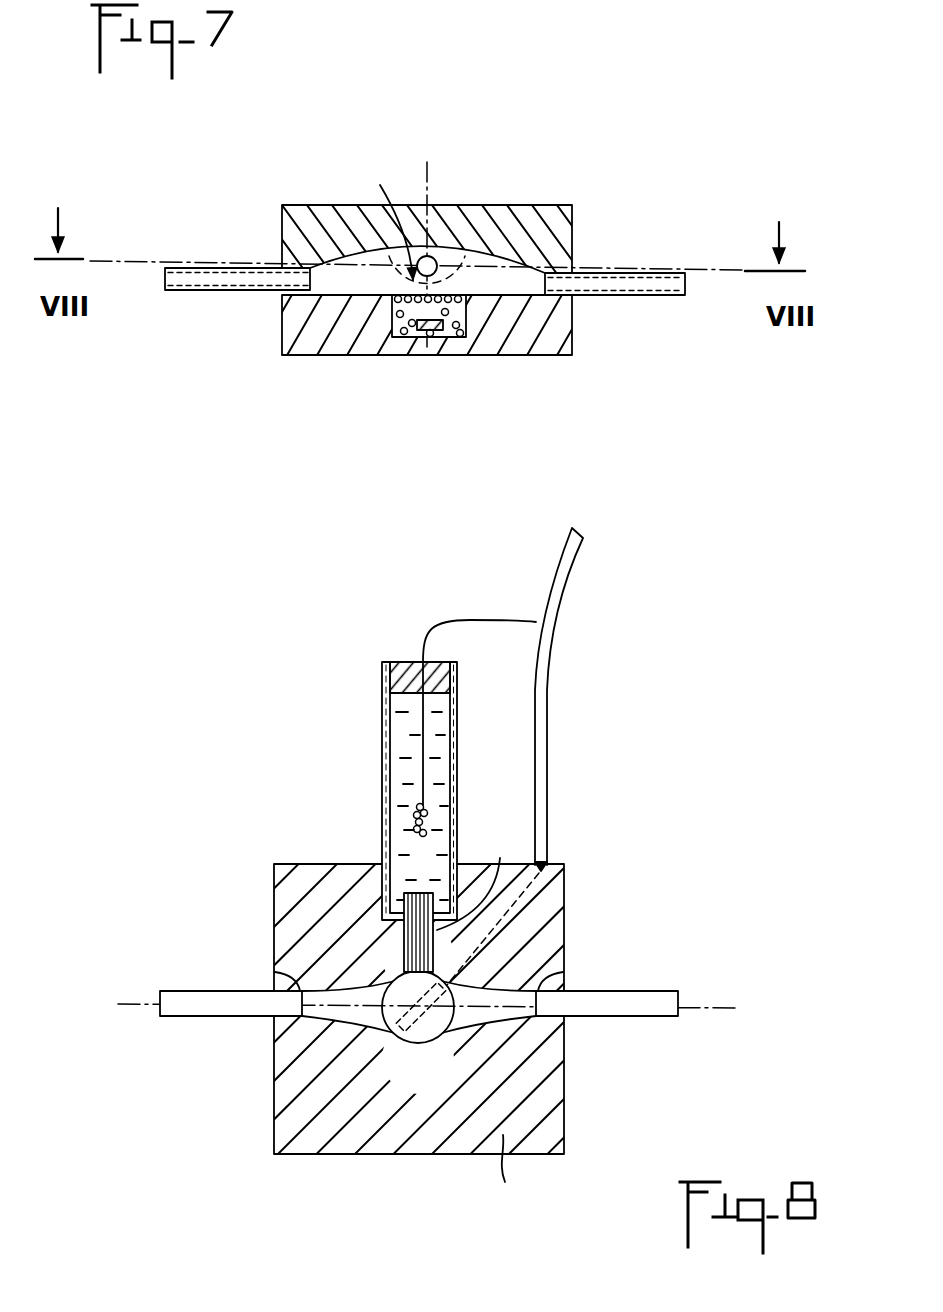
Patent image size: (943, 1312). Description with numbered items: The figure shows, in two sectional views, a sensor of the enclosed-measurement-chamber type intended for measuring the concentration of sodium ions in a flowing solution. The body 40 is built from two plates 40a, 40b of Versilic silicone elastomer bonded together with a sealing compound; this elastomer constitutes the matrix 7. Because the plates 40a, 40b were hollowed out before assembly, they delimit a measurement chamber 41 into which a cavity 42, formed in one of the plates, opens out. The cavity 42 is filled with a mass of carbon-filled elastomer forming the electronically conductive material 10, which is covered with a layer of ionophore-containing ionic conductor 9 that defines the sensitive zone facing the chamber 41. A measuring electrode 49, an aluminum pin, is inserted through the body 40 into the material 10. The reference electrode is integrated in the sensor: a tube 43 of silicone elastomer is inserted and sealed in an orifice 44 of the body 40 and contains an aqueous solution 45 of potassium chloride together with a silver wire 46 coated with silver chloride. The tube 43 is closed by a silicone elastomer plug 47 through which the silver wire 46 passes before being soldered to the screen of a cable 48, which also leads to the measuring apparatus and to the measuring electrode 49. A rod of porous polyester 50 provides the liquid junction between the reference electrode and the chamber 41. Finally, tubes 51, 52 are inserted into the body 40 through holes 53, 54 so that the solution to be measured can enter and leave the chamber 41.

In FIG. 7, the matrix 7 is at (386, 215).
In FIG. 8, the matrix 7 is at (512, 1175).
In FIG. 7, the ionic conductor 9 is at (465, 298).
In FIG. 7, the electronically conductive material 10 is at (452, 337).
In FIG. 7, the body 40 is at (413, 272).
In FIG. 8, the body 40 is at (419, 1162).
In FIG. 7, the plate 40a is at (282, 340).
In FIG. 7, the plate 40b is at (282, 226).
In FIG. 7, the measurement chamber 41 is at (357, 280).
In FIG. 8, the measurement chamber 41 is at (366, 1040).
In FIG. 7, the cavity 42 is at (402, 342).
In FIG. 8, the cavity 42 is at (427, 1030).
In FIG. 8, the tube 43 is at (457, 724).
In FIG. 8, the orifice 44 is at (373, 893).
In FIG. 8, the aqueous solution 45 is at (438, 853).
In FIG. 8, the silver wire 46 is at (428, 818).
In FIG. 8, the plug 47 is at (400, 680).
In FIG. 8, the cable 48 is at (549, 640).
In FIG. 7, the measuring electrode 49 is at (427, 345).
In FIG. 8, the measuring electrode 49 is at (433, 993).
In FIG. 7, the rod of porous polyester 50 is at (433, 257).
In FIG. 8, the rod of porous polyester 50 is at (480, 880).
In FIG. 7, the tube 51 is at (640, 288).
In FIG. 8, the tube 51 is at (613, 1020).
In FIG. 7, the tube 52 is at (182, 282).
In FIG. 8, the tube 52 is at (184, 1012).
In FIG. 8, the hole 53 is at (547, 990).
In FIG. 8, the hole 54 is at (280, 977).